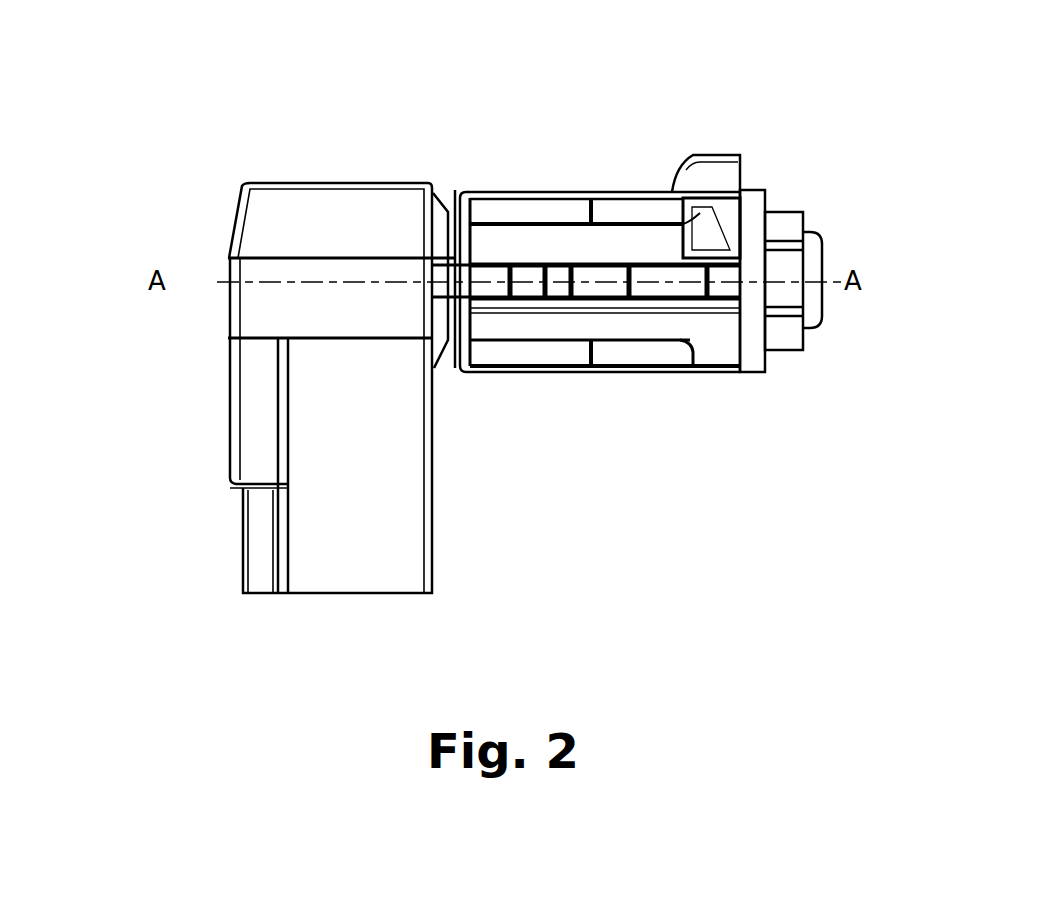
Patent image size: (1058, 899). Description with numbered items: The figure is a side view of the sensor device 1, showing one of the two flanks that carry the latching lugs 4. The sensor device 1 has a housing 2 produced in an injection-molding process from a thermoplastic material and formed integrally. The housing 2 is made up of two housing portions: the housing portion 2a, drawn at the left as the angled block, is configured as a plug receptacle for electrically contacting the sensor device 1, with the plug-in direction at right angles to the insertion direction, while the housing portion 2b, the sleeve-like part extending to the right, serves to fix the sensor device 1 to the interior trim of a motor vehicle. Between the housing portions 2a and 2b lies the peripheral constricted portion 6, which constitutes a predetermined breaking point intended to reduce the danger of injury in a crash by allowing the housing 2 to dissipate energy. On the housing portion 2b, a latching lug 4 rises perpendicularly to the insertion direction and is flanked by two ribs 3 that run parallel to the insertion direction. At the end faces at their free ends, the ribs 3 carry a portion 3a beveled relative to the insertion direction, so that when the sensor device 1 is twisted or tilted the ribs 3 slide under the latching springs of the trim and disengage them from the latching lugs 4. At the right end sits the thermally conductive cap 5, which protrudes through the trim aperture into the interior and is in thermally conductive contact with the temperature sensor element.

The sensor device 1 is at (835, 97).
The housing 2 is at (570, 190).
The housing portion 2a is at (230, 403).
The housing portion 2b is at (628, 190).
The ribs 3 is at (645, 193).
The beveled portion 3a is at (531, 213).
The latching lugs 4 is at (505, 297).
The thermally conductive cap 5 is at (812, 232).
The constricted portion 6 is at (446, 197).